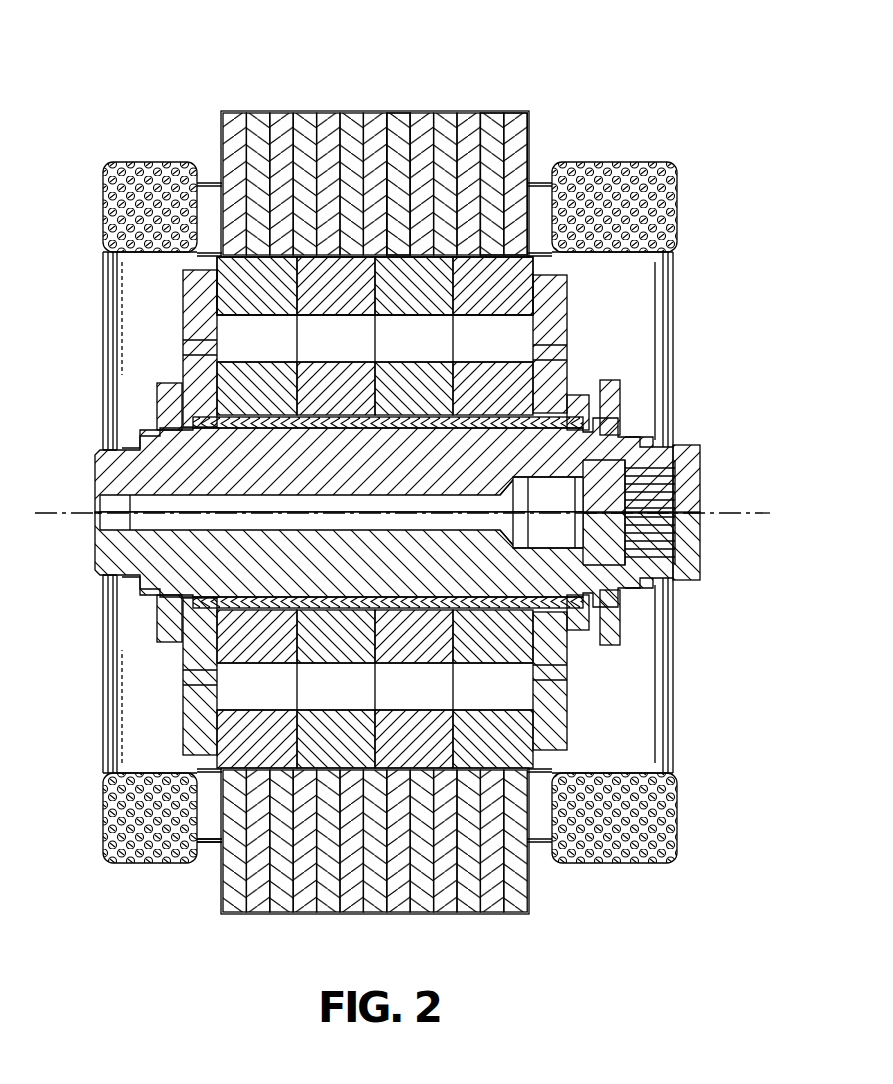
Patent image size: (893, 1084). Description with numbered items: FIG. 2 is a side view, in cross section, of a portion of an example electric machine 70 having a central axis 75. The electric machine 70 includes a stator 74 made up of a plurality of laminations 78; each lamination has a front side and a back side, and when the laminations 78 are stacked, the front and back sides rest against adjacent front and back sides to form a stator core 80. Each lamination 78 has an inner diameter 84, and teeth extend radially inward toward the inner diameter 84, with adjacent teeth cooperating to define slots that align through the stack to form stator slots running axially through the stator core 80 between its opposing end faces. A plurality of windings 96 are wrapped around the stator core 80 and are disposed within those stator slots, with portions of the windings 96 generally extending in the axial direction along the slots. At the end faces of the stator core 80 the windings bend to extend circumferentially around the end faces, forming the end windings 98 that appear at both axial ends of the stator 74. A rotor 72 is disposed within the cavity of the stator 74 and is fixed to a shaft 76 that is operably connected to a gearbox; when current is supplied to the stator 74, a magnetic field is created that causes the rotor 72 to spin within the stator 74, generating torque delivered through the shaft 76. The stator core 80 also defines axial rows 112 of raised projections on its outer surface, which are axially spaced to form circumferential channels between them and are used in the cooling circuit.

The electric machine 70 is at (181, 76).
The rotor 72 is at (492, 288).
The stator 74 is at (295, 112).
The central axis 75 is at (740, 498).
The shaft 76 is at (690, 447).
The laminations 78 is at (516, 124).
The stator core 80 is at (405, 112).
The inner diameter 84 is at (255, 262).
The windings 96 is at (213, 832).
The end windings 98 is at (668, 167).
The axial rows 112 is at (222, 152).